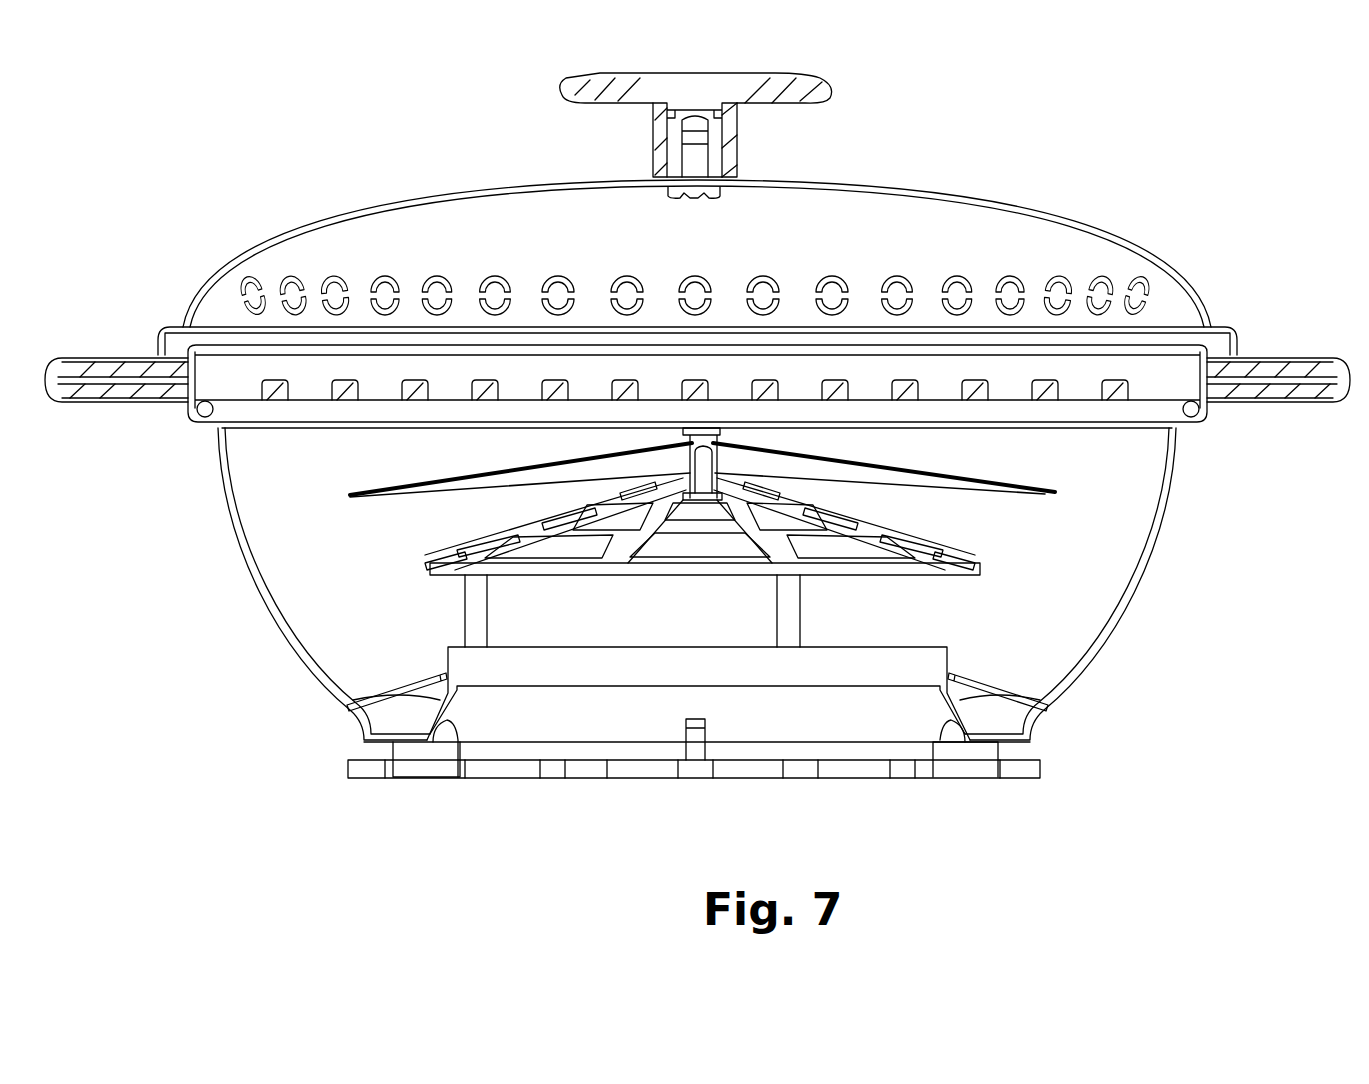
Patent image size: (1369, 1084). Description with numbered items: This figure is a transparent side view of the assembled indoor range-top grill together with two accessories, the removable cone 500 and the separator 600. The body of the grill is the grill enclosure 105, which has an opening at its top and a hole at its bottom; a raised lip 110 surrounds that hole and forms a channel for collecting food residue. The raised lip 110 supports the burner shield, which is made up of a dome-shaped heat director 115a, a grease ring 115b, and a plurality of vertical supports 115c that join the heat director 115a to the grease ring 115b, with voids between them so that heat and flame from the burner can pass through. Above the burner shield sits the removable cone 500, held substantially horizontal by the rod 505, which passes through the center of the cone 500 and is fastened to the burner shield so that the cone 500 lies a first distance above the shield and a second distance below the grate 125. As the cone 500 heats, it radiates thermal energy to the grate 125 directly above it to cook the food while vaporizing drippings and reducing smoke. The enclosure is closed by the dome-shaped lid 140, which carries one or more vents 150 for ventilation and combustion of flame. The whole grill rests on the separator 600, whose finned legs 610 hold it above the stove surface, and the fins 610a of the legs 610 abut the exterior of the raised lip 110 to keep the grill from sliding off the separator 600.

The lid 140 is at (1000, 213).
The vents 150 is at (1132, 280).
The grate 125 is at (1172, 442).
The grill enclosure 105 is at (1143, 583).
The raised lip 110 is at (373, 703).
The heat director 115a is at (435, 560).
The grease ring 115b is at (1000, 698).
The vertical supports 115c is at (460, 629).
The removable cone 500 is at (387, 485).
The rod 505 is at (940, 503).
The separator 600 is at (538, 768).
The finned legs 610 is at (405, 760).
The fins 610a is at (458, 748).